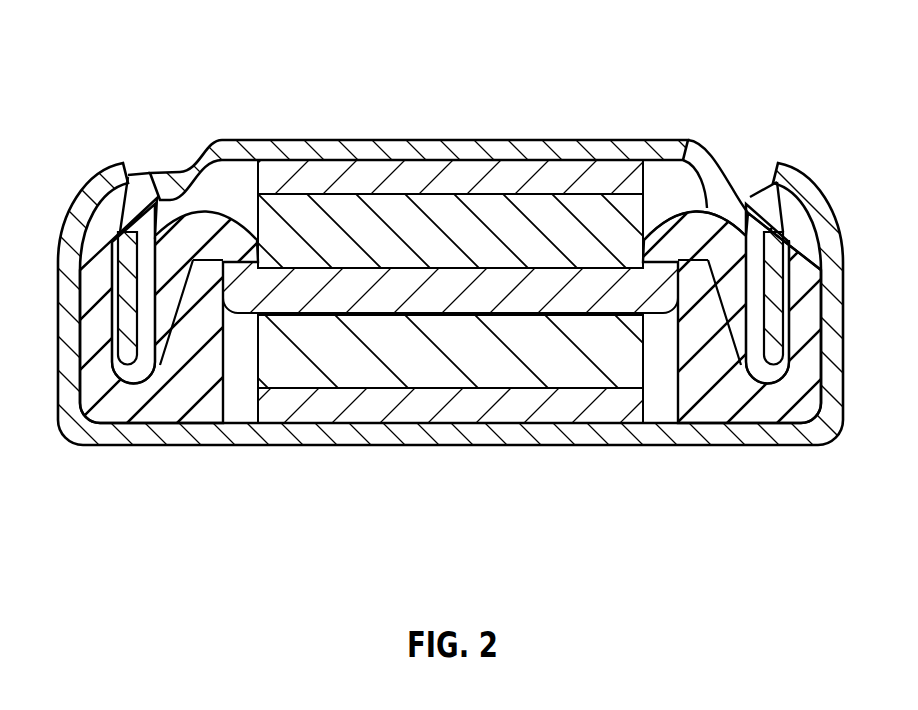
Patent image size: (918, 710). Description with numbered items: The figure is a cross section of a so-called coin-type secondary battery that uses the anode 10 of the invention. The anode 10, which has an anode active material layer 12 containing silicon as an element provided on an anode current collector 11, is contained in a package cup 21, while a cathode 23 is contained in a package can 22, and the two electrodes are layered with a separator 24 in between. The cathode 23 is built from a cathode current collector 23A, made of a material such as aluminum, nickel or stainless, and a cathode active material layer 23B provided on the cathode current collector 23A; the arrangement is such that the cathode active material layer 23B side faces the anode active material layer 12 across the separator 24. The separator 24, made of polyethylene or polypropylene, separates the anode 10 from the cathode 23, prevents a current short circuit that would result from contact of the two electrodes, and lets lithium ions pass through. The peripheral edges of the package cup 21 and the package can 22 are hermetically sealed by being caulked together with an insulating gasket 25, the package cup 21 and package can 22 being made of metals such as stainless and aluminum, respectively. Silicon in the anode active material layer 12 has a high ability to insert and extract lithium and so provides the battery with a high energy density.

The anode 10 is at (355, 72).
The anode current collector 11 is at (366, 168).
The anode active material layer 12 is at (516, 227).
The package cup 21 is at (263, 150).
The package can 22 is at (314, 435).
The cathode 23 is at (605, 525).
The cathode current collector 23A is at (452, 408).
The cathode active material layer 23B is at (583, 378).
The separator 24 is at (697, 235).
The insulating gasket 25 is at (180, 410).